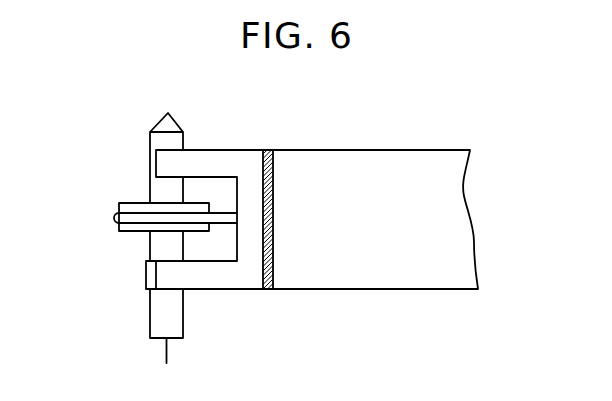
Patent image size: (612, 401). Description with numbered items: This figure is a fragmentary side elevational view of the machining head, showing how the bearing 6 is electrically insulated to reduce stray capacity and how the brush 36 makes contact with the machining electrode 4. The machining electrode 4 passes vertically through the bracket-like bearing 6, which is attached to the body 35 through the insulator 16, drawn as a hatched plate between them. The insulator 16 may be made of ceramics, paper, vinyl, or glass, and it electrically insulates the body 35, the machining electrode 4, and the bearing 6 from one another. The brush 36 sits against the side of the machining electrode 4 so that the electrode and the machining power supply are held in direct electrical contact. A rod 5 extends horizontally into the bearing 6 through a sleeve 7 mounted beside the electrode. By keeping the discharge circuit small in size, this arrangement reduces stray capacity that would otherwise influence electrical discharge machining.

The machining electrode 4 is at (162, 318).
The rod 5 is at (114, 218).
The bearing 6 is at (237, 158).
The sleeve 7 is at (132, 228).
The insulator 16 is at (272, 151).
The body 35 is at (397, 158).
The brush 36 is at (150, 272).